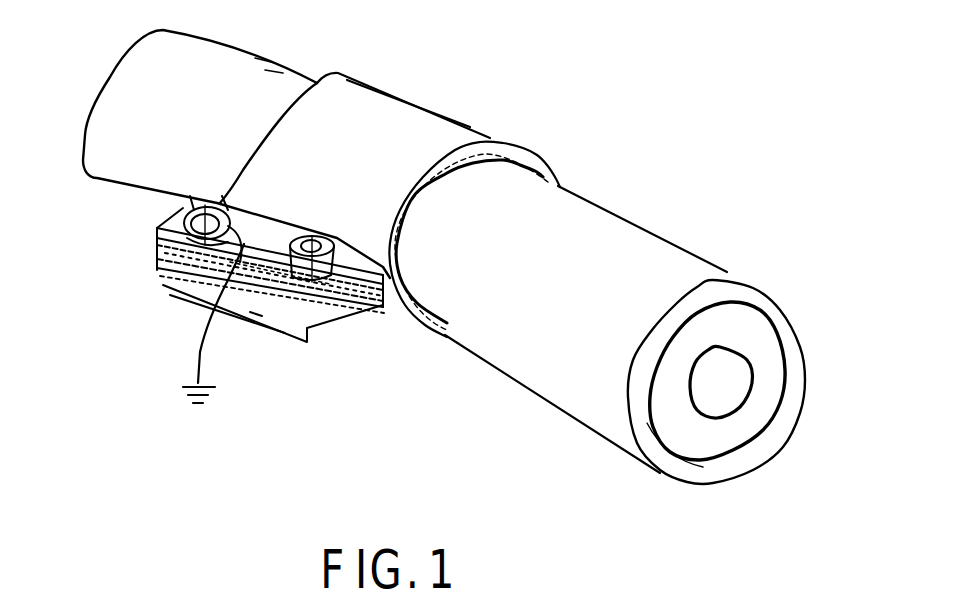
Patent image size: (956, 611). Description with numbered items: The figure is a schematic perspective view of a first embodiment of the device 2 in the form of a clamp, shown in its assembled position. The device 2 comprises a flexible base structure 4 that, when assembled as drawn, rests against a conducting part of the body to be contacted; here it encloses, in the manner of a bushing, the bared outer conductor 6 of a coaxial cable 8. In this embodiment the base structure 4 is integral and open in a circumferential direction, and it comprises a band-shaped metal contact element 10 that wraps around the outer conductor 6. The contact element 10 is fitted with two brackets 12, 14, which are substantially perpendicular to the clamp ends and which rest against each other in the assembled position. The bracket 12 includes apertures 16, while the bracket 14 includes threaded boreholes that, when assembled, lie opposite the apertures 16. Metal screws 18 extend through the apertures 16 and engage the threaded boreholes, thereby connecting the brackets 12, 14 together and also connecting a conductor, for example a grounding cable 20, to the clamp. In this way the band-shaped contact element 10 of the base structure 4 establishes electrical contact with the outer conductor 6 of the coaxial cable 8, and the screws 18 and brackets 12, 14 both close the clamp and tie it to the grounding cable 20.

The device 2 is at (630, 98).
The flexible base structure 4 is at (395, 115).
The bared outer conductor 6 is at (743, 303).
The coaxial cable 8 is at (807, 387).
The band-shaped metal contact element 10 is at (355, 312).
The bracket 12 is at (155, 240).
The bracket 14 is at (155, 272).
The apertures 16 is at (367, 305).
The metal screws 18 is at (300, 272).
The grounding cable 20 is at (202, 358).